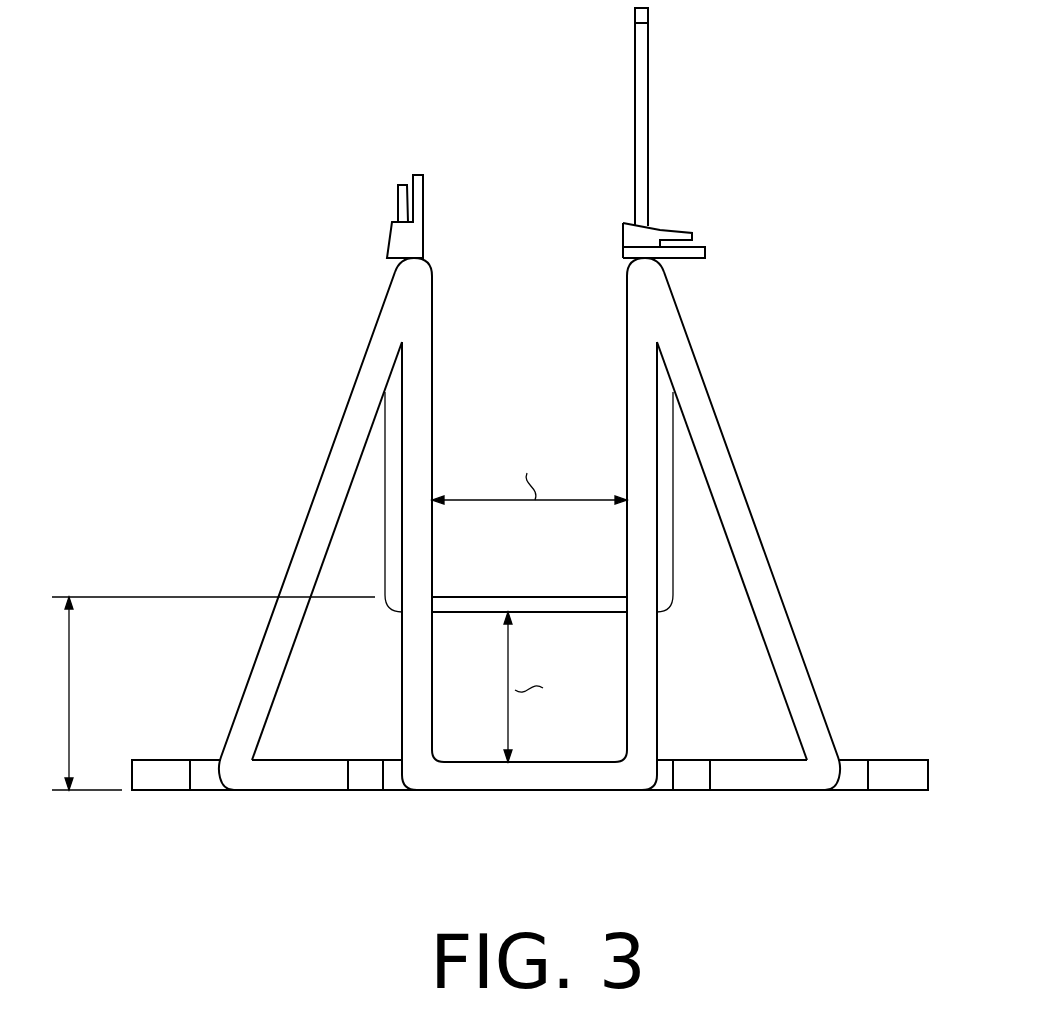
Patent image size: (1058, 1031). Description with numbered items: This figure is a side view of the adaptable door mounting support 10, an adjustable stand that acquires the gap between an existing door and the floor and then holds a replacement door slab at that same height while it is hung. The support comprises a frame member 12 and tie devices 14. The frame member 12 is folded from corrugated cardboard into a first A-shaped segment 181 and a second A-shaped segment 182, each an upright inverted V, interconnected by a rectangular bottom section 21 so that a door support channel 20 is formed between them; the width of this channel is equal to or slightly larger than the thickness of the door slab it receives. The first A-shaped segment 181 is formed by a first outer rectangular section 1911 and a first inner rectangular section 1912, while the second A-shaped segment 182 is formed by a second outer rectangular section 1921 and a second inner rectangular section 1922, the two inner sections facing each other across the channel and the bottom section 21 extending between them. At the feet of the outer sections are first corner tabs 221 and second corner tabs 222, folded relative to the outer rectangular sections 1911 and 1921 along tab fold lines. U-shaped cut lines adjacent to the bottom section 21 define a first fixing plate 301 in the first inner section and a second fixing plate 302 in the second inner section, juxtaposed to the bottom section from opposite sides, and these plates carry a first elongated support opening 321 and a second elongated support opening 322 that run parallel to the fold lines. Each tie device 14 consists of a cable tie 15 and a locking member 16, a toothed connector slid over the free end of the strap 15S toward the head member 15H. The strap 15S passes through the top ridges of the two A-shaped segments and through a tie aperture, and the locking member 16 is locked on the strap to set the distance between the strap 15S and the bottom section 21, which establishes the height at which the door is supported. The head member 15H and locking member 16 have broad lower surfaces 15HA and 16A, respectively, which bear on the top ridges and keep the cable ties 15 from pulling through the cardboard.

The adaptable door mounting support 10 is at (425, 118).
The frame member 12 is at (317, 485).
The tie device 14 is at (652, 197).
The cable tie 15 is at (652, 79).
The head member 15H is at (415, 240).
The lower surface of head member 15HA is at (388, 270).
The strap 15S is at (535, 605).
The locking member 16 is at (633, 240).
The lower surface of locking member 16A is at (677, 263).
The first A-shaped segment 181 is at (706, 382).
The second A-shaped segment 182 is at (352, 380).
The first outer rectangular section 1911 is at (765, 595).
The first inner rectangular section 1912 is at (645, 690).
The second outer rectangular section 1921 is at (300, 565).
The second inner rectangular section 1922 is at (413, 690).
The door support channel 20 is at (545, 387).
The rectangular bottom section 21 is at (530, 777).
The first corner tabs 221 is at (740, 777).
The second corner tabs 222 is at (310, 778).
The first fixing plate 301 is at (903, 778).
The second fixing plate 302 is at (150, 778).
The first elongated support opening 321 is at (863, 776).
The second elongated support opening 322 is at (193, 776).